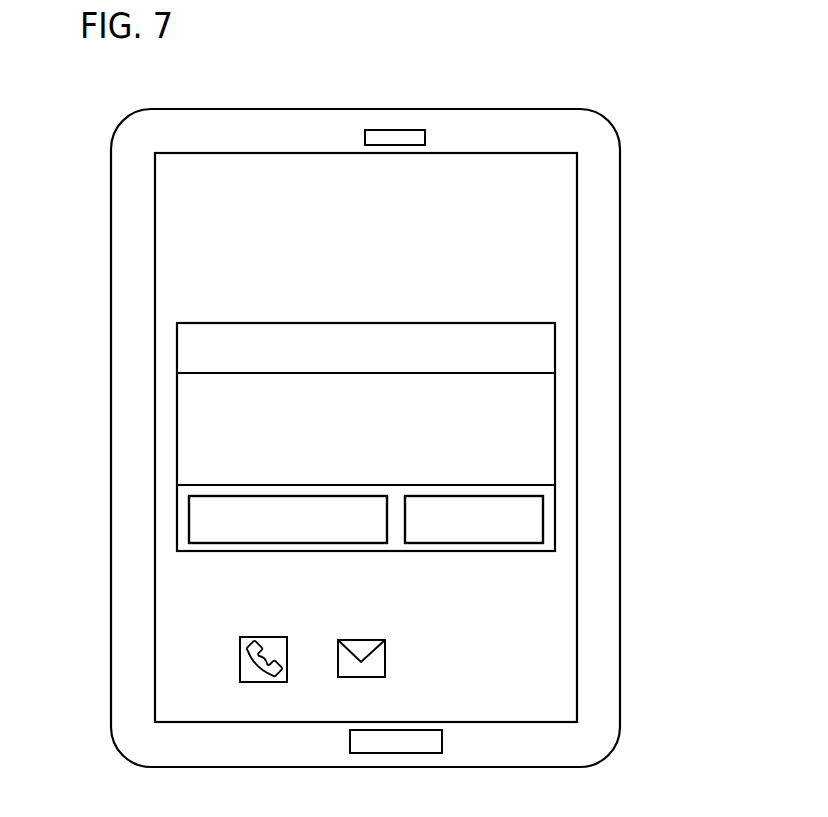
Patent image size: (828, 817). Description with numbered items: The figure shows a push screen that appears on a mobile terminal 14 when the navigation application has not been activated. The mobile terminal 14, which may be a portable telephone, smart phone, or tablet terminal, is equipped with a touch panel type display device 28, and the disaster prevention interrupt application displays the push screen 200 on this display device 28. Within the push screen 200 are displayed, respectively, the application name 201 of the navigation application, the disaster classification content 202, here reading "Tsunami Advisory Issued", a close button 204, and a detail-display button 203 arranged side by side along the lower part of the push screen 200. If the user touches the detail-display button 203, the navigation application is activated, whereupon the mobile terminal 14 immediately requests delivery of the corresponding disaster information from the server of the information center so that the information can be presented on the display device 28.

The mobile terminal 14 is at (620, 250).
The display device 28 is at (578, 595).
The push screen 200 is at (367, 437).
The application name 201 is at (535, 352).
The disaster classification content 202 is at (535, 418).
The detail-display button 203 is at (189, 522).
The close button 204 is at (543, 519).